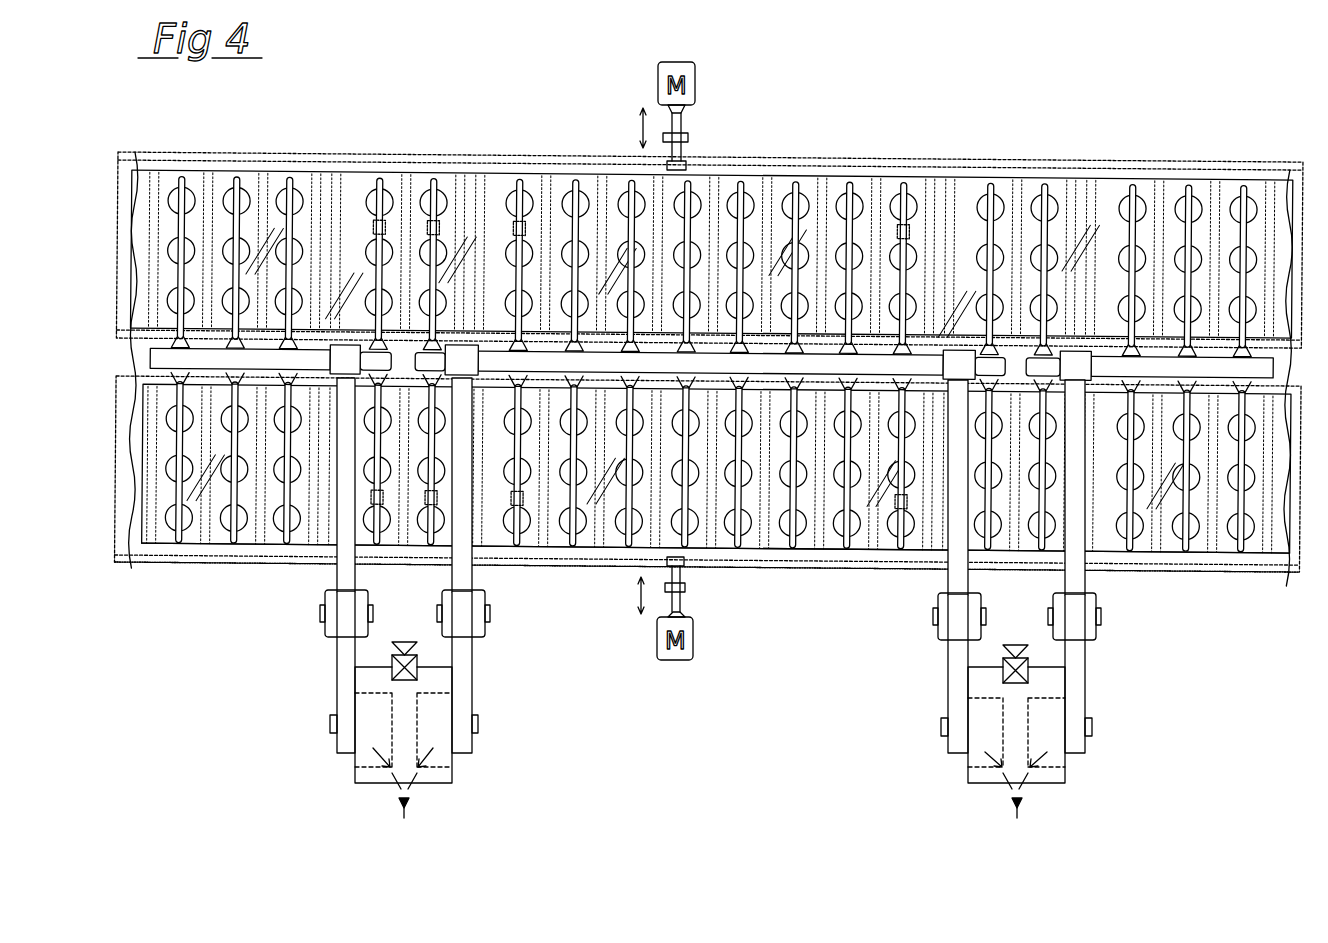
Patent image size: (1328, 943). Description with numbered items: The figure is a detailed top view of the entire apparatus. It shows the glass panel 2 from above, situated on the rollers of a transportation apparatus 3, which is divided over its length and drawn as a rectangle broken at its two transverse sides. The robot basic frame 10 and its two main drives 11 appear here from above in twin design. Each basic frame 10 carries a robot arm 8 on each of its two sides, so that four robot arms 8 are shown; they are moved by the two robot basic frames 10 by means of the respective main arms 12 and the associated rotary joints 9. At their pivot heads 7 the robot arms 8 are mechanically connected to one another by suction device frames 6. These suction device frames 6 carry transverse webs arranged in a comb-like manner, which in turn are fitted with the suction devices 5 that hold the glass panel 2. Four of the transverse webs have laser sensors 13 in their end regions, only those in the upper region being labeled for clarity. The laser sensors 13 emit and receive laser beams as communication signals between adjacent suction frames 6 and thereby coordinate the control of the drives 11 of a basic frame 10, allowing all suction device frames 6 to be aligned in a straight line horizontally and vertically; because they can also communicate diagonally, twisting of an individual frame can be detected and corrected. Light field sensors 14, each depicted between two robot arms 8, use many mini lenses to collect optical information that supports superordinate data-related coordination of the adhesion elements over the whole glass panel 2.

The glass panel 2 is at (140, 527).
The transportation apparatus 3 is at (600, 535).
The suction devices 5 is at (837, 518).
The suction device frames 6 is at (492, 362).
The pivot heads 7 is at (343, 362).
The robot arm 8 is at (340, 570).
The rotary joints 9 is at (343, 618).
The basic frame 10 is at (452, 783).
The main drives 11 is at (713, 824).
The main arms 12 is at (343, 675).
The laser sensors 13 is at (427, 232).
The light field sensors 14 is at (407, 678).